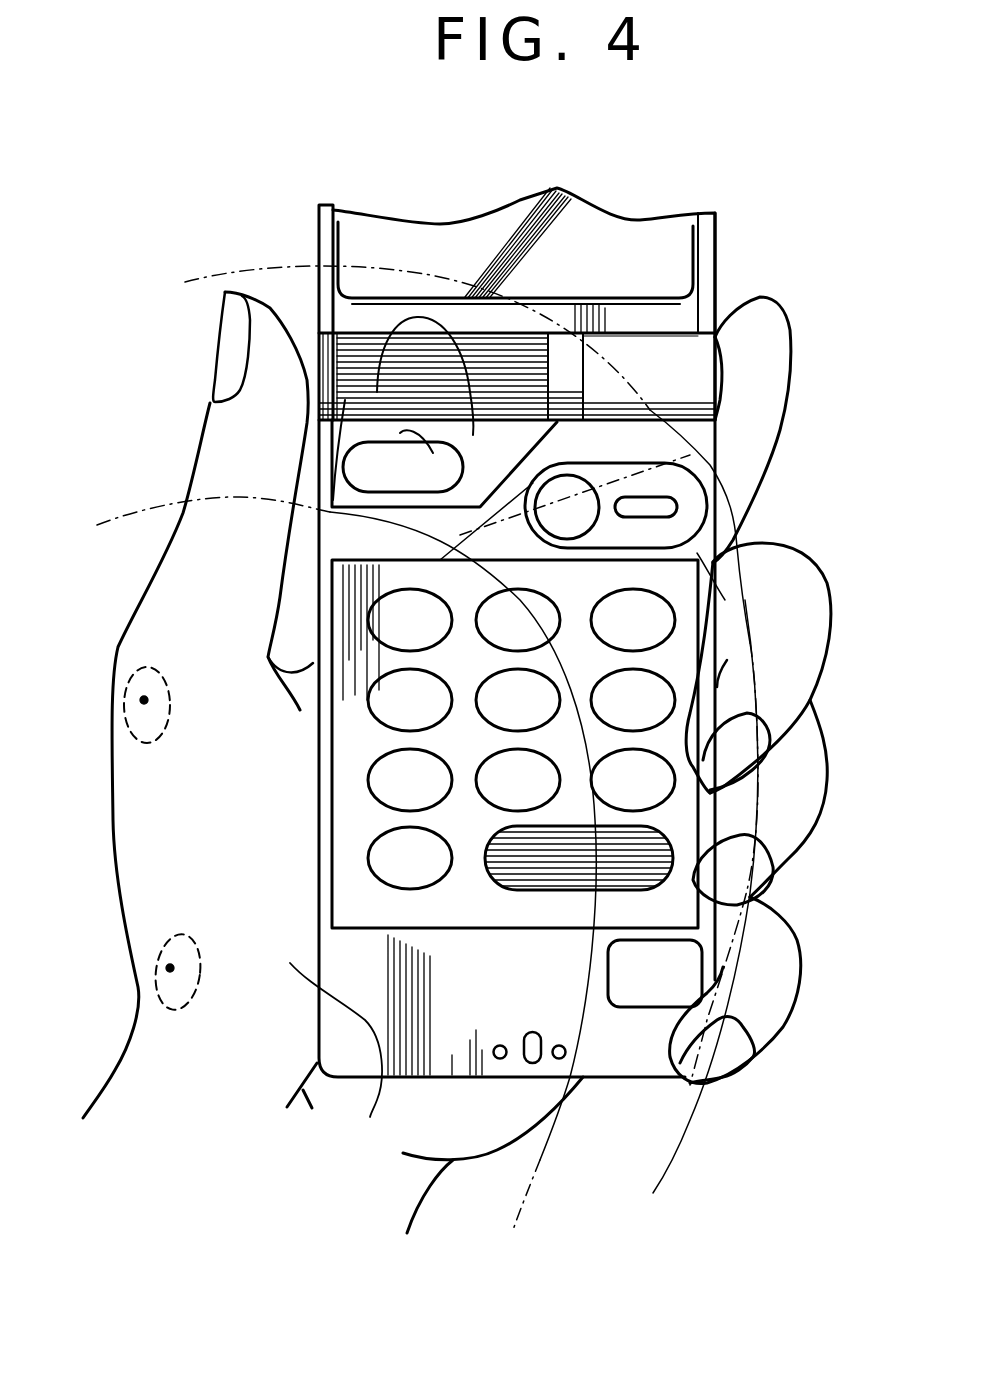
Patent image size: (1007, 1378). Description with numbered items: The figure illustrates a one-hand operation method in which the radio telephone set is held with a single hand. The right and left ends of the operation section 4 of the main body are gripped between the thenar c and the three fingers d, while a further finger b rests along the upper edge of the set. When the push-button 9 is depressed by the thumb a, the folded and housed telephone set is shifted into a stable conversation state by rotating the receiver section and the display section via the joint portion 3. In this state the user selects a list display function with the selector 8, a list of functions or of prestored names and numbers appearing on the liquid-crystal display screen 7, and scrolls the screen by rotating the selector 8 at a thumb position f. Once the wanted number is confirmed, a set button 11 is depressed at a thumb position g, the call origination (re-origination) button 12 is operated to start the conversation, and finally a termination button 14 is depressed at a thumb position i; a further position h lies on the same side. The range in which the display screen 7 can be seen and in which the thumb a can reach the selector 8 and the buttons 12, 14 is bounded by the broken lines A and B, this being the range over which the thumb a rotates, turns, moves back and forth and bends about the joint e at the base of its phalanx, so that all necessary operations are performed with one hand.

The joint portion 3 is at (727, 370).
The operation section 4 is at (319, 882).
The liquid-crystal display screen 7 is at (578, 215).
The selector 8 is at (535, 390).
The push-button 9 is at (317, 380).
The set button 11 is at (560, 397).
The call origination (re-origination) button 12 is at (663, 483).
The termination button 14 is at (723, 1068).
The thumb a is at (225, 347).
The index finger b is at (793, 367).
The thenar c is at (435, 1098).
The three fingers d is at (843, 550).
The joint e is at (144, 700).
The thumb position f is at (441, 340).
The thumb position g is at (410, 578).
The finger position h is at (755, 598).
The thumb position i is at (690, 982).
The broken line A is at (236, 268).
The broken line B is at (167, 512).